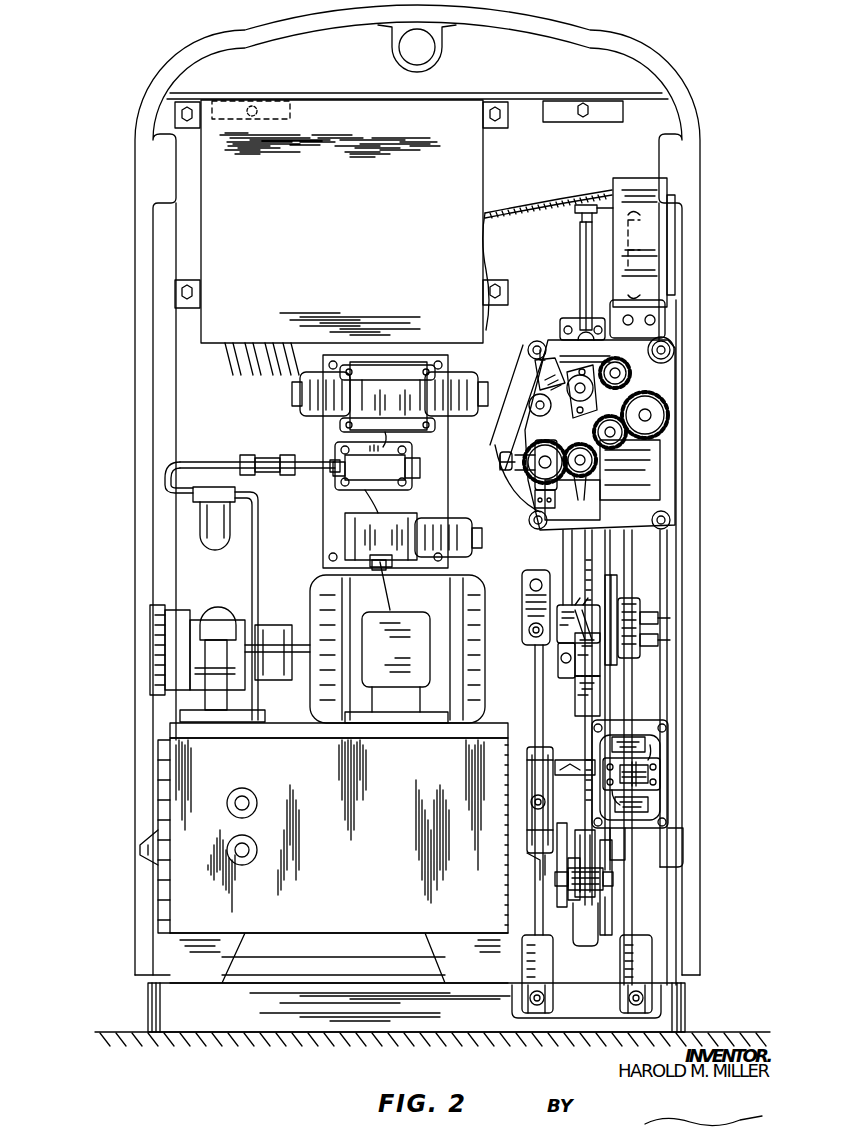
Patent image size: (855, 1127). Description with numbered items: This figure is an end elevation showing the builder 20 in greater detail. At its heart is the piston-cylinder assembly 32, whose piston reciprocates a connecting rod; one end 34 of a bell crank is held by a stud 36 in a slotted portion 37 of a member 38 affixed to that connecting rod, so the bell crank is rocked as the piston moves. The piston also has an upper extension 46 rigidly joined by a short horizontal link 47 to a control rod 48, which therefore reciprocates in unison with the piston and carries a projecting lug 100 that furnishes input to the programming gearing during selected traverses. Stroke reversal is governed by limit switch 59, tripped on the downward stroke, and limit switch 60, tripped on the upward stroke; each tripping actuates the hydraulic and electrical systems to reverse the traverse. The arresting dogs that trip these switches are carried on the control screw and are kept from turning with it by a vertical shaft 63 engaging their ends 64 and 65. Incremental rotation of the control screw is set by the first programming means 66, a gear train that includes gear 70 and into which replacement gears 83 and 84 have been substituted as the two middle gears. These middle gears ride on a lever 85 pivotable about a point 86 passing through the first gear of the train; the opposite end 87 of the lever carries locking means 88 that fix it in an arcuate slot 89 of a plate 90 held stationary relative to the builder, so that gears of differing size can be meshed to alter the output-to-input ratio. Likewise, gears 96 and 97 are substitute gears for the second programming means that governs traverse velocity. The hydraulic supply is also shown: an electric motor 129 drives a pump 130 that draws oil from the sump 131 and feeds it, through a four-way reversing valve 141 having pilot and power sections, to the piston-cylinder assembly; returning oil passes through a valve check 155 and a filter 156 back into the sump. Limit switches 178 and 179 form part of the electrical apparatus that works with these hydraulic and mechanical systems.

The builder 20 is at (120, 476).
The piston-cylinder assembly 32 is at (575, 558).
The end of bell crank 34 is at (568, 896).
The stud 36 is at (602, 880).
The slotted portion 37 is at (592, 938).
The member 38 is at (616, 892).
The upper extension 46 is at (578, 262).
The short horizontal link 47 is at (578, 210).
The control rod 48 is at (630, 288).
The limit switch 59 is at (676, 840).
The limit switch 60 is at (645, 750).
The vertical shaft 63 is at (640, 578).
The end of arresting dog 64 is at (655, 606).
The end of arresting dog 65 is at (655, 628).
The first programming means 66 is at (690, 410).
The gear 70 is at (662, 432).
The gear 83 is at (668, 368).
The gear 84 is at (633, 376).
The lever 85 is at (500, 346).
The pivot point 86 is at (578, 386).
The end of lever 87 is at (532, 408).
The locking means 88 is at (570, 398).
The arcuate slot 89 is at (538, 392).
The plate 90 is at (505, 490).
The gear 96 is at (595, 470).
The gear 97 is at (582, 488).
The projecting lug 100 is at (580, 328).
The electric motor 129 is at (320, 595).
The pump 130 is at (230, 598).
The sump 131 is at (342, 879).
The four-way reversing valve 141 is at (274, 415).
The valve check 155 is at (268, 460).
The filter 156 is at (208, 538).
The limit switch 178 is at (572, 654).
The limit switch 179 is at (576, 703).